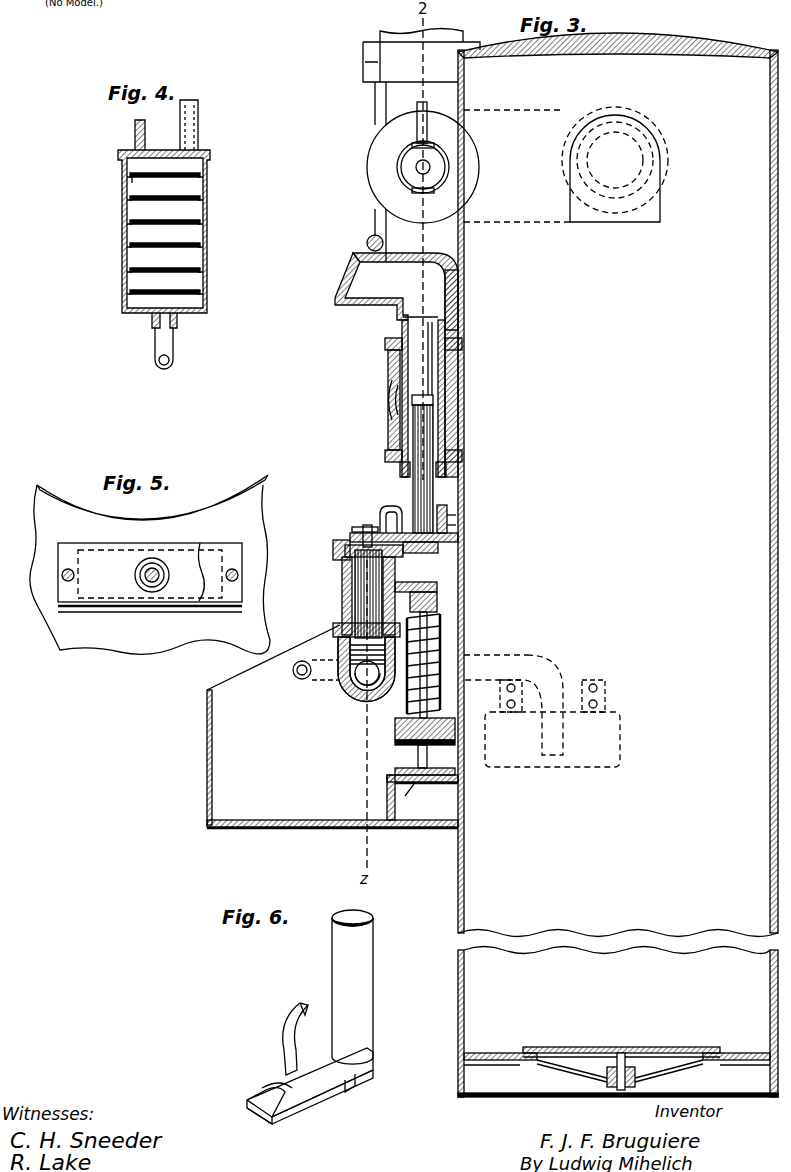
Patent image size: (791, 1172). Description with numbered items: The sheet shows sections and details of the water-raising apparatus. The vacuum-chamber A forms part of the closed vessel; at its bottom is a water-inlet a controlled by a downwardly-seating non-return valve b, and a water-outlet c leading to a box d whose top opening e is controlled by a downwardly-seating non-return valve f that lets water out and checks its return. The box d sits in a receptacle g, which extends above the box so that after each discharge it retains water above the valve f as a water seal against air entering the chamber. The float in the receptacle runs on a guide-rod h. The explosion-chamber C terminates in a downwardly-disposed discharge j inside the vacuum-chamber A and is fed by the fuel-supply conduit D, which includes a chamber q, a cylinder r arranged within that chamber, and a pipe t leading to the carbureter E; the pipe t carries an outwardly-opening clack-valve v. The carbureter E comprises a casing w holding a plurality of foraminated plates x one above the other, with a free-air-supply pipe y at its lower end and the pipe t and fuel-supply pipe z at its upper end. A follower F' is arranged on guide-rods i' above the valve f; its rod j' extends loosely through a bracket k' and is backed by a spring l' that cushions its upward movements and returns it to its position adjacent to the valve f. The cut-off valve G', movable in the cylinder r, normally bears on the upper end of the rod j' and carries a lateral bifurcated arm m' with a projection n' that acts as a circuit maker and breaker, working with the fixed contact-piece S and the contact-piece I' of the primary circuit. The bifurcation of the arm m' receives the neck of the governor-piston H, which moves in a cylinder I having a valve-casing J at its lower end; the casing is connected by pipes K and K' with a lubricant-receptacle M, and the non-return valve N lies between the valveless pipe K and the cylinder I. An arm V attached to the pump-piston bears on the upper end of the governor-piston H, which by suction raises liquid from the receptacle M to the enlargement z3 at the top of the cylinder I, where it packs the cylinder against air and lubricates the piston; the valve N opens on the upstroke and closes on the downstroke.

In FIG. 3, the vacuum-chamber A is at (618, 565).
In FIG. 5, the vacuum-chamber A is at (212, 512).
In FIG. 3, the explosion-chamber C is at (377, 185).
In FIG. 3, the guide-rod h is at (430, 166).
In FIG. 3, the discharge j is at (572, 166).
In FIG. 3, the clack-valve v is at (396, 291).
In FIG. 3, the chamber q is at (388, 368).
In FIG. 3, the fuel-supply conduit D is at (398, 400).
In FIG. 3, the cylinder r is at (433, 381).
In FIG. 3, the fixed contact-piece S is at (425, 400).
In FIG. 3, the plunger rod G' is at (455, 469).
In FIG. 6, the plunger rod G' is at (352, 987).
In FIG. 3, the collar I' is at (464, 515).
In FIG. 3, the bifurcated arm m' is at (426, 538).
In FIG. 6, the bifurcated arm m' is at (310, 1086).
In FIG. 3, the lateral projection n' is at (380, 506).
In FIG. 6, the lateral projection n' is at (277, 1039).
In FIG. 3, the arm V is at (365, 532).
In FIG. 3, the enlargement z3 is at (340, 555).
In FIG. 3, the cylinder I is at (346, 597).
In FIG. 3, the governor-piston H is at (364, 600).
In FIG. 3, the bracket k' is at (445, 650).
In FIG. 3, the spring l' is at (447, 664).
In FIG. 5, the spring l' is at (160, 574).
In FIG. 3, the rod j' is at (486, 663).
In FIG. 5, the rod j' is at (136, 584).
In FIG. 3, the pipe K is at (534, 705).
In FIG. 3, the lubricant-receptacle M is at (620, 744).
In FIG. 3, the pipe K' is at (309, 681).
In FIG. 3, the non-return valve N is at (352, 680).
In FIG. 3, the valve-casing J is at (352, 695).
In FIG. 3, the plate F' is at (413, 731).
In FIG. 5, the plate F' is at (150, 591).
In FIG. 3, the guide-rods i' is at (431, 756).
In FIG. 5, the guide-rods i' is at (89, 570).
In FIG. 3, the non-return valve f is at (403, 770).
In FIG. 3, the water-outlet c is at (455, 793).
In FIG. 3, the opening e is at (411, 795).
In FIG. 3, the box d is at (388, 801).
In FIG. 3, the receptacle g is at (332, 726).
In FIG. 3, the water-inlet a is at (576, 1057).
In FIG. 3, the non-return valve b is at (672, 1048).
In FIG. 4, the carbureter E is at (172, 231).
In FIG. 4, the casing w is at (210, 253).
In FIG. 4, the foraminated plates x is at (150, 180).
In FIG. 4, the fuel-supply pipe z is at (134, 137).
In FIG. 4, the pipe t is at (195, 128).
In FIG. 4, the free-air-supply pipe y is at (174, 335).